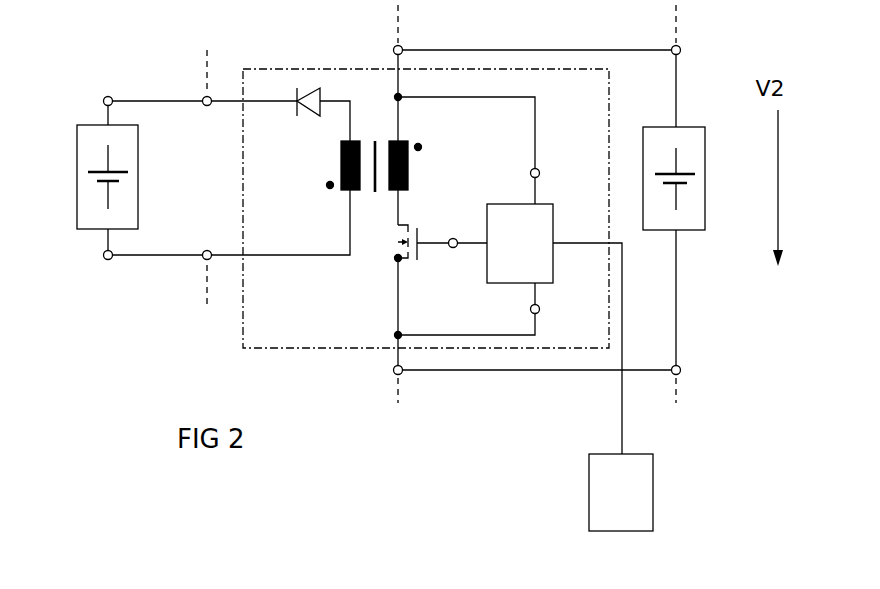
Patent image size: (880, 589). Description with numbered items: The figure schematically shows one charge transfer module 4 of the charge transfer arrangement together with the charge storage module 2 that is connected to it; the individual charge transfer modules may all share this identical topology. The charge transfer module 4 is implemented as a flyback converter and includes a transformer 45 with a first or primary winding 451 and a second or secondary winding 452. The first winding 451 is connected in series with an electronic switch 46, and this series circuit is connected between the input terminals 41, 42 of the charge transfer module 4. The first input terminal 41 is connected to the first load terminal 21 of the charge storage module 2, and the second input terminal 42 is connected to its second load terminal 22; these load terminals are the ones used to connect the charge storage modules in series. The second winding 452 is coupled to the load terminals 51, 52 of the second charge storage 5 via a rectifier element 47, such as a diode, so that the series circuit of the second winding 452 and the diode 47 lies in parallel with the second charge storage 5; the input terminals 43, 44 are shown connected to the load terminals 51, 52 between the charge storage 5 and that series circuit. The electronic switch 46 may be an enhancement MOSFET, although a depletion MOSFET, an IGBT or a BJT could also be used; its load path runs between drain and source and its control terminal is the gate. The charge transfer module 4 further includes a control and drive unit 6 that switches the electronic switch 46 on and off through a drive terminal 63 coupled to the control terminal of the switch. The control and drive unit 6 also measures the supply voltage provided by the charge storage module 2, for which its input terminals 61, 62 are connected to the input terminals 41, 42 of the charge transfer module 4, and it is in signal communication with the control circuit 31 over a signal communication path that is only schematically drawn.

The charge storage module 2 is at (706, 176).
The charge transfer module 4 is at (287, 68).
The second charge storage 5 is at (76, 172).
The control and drive unit 6 is at (504, 200).
The first load terminal 21 is at (680, 46).
The second load terminal 22 is at (681, 366).
The control circuit 31 is at (585, 492).
The first input terminal 41 is at (403, 46).
The second input terminal 42 is at (403, 374).
The input terminal 43 is at (201, 98).
The input terminal 44 is at (204, 262).
The transformer 45 is at (379, 203).
The first winding 451 is at (420, 175).
The second winding 452 is at (330, 162).
The electronic switch 46 is at (420, 232).
The rectifier element 47 is at (291, 122).
The load terminal 51 is at (113, 93).
The load terminal 52 is at (108, 263).
The input terminal 61 is at (541, 172).
The input terminal 62 is at (541, 308).
The drive terminal 63 is at (453, 255).